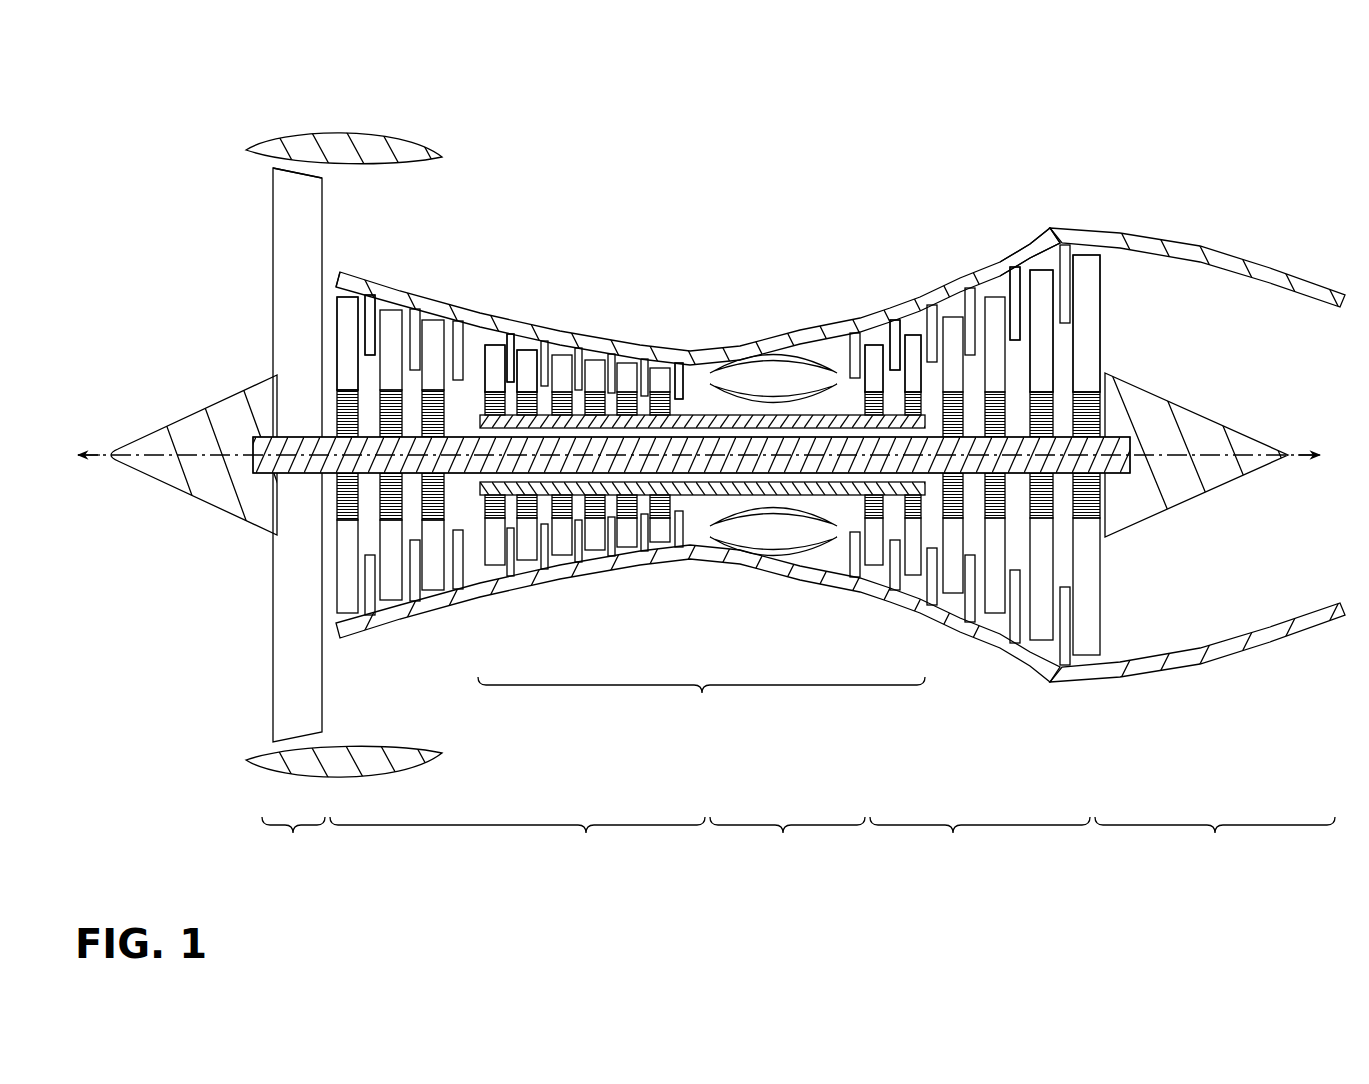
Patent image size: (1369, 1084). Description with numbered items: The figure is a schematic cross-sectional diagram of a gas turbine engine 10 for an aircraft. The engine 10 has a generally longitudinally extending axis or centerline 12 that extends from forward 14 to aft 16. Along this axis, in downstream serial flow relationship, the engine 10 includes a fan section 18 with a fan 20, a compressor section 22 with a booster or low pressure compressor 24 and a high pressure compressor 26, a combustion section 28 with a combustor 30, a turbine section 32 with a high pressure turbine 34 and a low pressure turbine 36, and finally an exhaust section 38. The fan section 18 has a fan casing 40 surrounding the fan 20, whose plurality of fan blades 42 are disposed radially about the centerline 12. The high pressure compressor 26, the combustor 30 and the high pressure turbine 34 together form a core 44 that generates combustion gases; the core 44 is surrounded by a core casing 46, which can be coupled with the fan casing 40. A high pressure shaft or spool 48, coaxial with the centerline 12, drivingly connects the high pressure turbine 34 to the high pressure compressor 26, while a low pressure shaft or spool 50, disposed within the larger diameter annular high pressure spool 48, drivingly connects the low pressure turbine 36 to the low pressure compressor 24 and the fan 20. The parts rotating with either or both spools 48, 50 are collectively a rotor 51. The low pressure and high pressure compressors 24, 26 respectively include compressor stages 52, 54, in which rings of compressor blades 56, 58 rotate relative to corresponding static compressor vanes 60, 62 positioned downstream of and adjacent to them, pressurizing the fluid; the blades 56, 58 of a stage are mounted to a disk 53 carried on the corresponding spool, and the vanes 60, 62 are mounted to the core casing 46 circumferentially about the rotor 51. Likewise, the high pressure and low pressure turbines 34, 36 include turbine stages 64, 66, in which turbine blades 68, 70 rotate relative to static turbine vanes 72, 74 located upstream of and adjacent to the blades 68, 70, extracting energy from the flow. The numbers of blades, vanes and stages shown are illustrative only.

The gas turbine engine 10 is at (130, 64).
The centerline 12 is at (170, 453).
The forward 14 is at (70, 455).
The aft 16 is at (1328, 455).
The fan section 18 is at (293, 842).
The fan 20 is at (268, 233).
The compressor section 22 is at (517, 842).
The low pressure compressor 24 is at (472, 610).
The high pressure compressor 26 is at (636, 576).
The combustion section 28 is at (787, 842).
The combustor 30 is at (830, 355).
The turbine section 32 is at (980, 842).
The high pressure turbine 34 is at (847, 608).
The low pressure turbine 36 is at (983, 645).
The exhaust section 38 is at (1209, 508).
The fan casing 40 is at (346, 134).
The fan blades 42 is at (290, 682).
The core 44 is at (701, 701).
The core casing 46 is at (760, 327).
The high pressure spool 48 is at (700, 408).
The low pressure spool 50 is at (465, 440).
The rotor 51 is at (621, 432).
The compressor stages 52 is at (334, 262).
The disk 53 is at (1000, 388).
The compressor stages 54 is at (496, 306).
The compressor blades 56 is at (350, 300).
The compressor blades 58 is at (509, 352).
The static compressor vanes 60 is at (374, 337).
The static compressor vanes 62 is at (518, 376).
The turbine stages 64 is at (880, 302).
The turbine stages 66 is at (1014, 243).
The turbine blades 68 is at (913, 350).
The turbine blades 70 is at (1040, 300).
The static turbine vanes 72 is at (900, 318).
The static turbine vanes 74 is at (1017, 262).